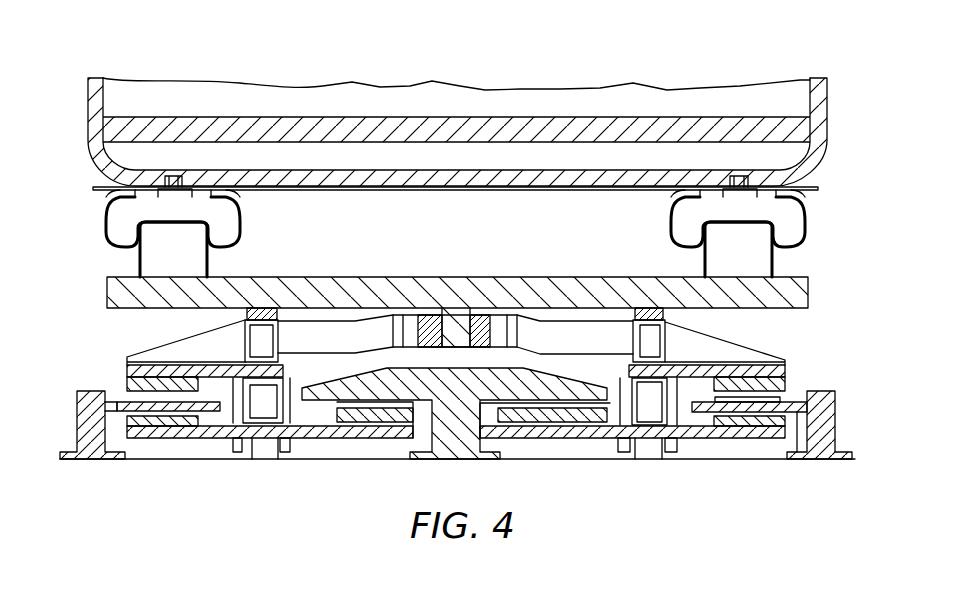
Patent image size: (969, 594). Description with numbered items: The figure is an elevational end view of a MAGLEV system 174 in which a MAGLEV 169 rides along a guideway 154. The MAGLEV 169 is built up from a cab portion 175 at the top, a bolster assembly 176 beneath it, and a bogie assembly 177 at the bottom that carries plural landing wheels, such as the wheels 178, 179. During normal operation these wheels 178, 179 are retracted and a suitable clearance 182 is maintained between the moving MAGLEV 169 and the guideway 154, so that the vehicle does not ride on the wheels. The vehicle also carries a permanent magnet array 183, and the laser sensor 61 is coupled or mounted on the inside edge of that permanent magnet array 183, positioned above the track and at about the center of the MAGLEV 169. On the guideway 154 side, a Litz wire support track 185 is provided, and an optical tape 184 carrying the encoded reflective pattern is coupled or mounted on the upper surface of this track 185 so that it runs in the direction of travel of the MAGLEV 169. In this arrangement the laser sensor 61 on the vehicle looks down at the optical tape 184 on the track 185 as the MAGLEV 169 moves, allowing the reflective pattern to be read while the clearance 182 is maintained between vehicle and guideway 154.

The MAGLEV system 174 is at (289, 56).
The MAGLEV 169 is at (391, 73).
The cab portion 175 is at (88, 114).
The bolster assembly 176 is at (812, 291).
The laser sensor 61 is at (702, 388).
The bogie assembly 177 is at (790, 369).
The optical tape 184 is at (737, 398).
The permanent magnet array 183 is at (800, 389).
The Litz wire support track 185 is at (761, 410).
The clearance 182 is at (115, 432).
The guideway 154 is at (355, 461).
The landing wheel 178 is at (259, 452).
The landing wheel 179 is at (648, 452).